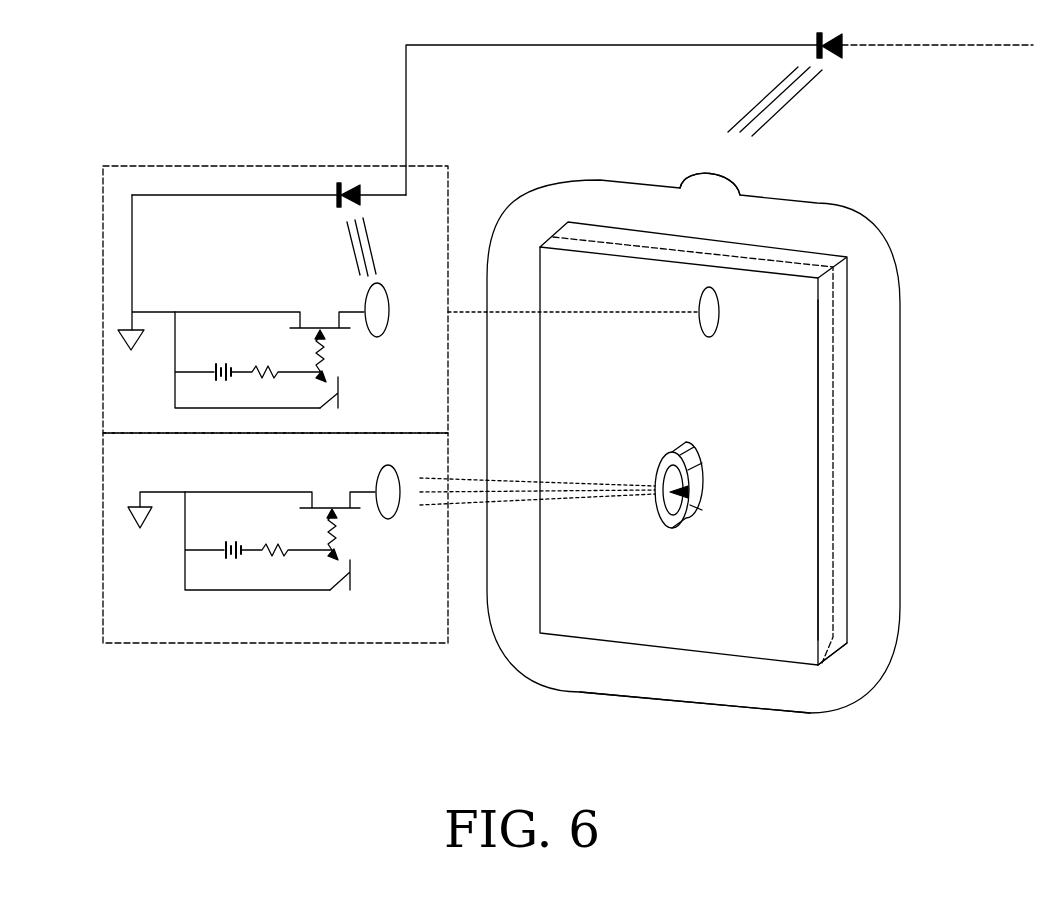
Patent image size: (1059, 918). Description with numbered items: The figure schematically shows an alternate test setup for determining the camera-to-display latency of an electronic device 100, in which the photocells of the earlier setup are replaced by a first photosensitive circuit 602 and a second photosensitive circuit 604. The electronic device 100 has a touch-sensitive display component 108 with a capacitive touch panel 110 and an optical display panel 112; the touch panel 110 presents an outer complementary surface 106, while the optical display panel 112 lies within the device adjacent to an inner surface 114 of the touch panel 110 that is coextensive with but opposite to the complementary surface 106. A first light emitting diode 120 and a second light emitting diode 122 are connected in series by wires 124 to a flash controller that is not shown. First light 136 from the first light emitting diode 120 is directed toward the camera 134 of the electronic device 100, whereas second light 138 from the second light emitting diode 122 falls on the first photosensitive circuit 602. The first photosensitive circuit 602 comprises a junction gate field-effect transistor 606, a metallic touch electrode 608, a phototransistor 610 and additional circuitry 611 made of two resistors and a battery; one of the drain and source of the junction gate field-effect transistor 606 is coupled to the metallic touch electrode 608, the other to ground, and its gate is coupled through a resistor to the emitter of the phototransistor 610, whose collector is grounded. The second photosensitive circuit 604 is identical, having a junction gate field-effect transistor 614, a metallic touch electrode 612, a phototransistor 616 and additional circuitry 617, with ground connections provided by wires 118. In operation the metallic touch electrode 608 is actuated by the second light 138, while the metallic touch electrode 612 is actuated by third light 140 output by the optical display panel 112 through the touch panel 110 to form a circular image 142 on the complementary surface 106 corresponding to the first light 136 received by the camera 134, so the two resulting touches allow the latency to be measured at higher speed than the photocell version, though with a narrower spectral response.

The electronic device 100 is at (903, 353).
The complementary surface 106 is at (772, 600).
The touch-sensitive display component 108 is at (850, 603).
The touch panel 110 is at (658, 598).
The optical display panel 112 is at (836, 527).
The inner surface 114 is at (821, 666).
The wires 118 is at (150, 312).
The first light emitting diode 120 is at (846, 52).
The second light emitting diode 122 is at (340, 183).
The wires 124 is at (595, 47).
The camera 134 is at (738, 183).
The first light 136 is at (766, 97).
The second light 138 is at (368, 248).
The third light 140 is at (605, 497).
The image 142 is at (673, 451).
The first photosensitive circuit 602 is at (102, 235).
The second photosensitive circuit 604 is at (102, 533).
The junction gate field-effect transistor 606 is at (318, 328).
The metallic touch electrode 608 is at (392, 301).
The phototransistor 610 is at (343, 391).
The additional circuitry 611 is at (188, 386).
The metallic touch electrode 612 is at (390, 466).
The junction gate field-effect transistor 614 is at (332, 505).
The phototransistor 616 is at (352, 569).
The additional circuitry 617 is at (200, 568).